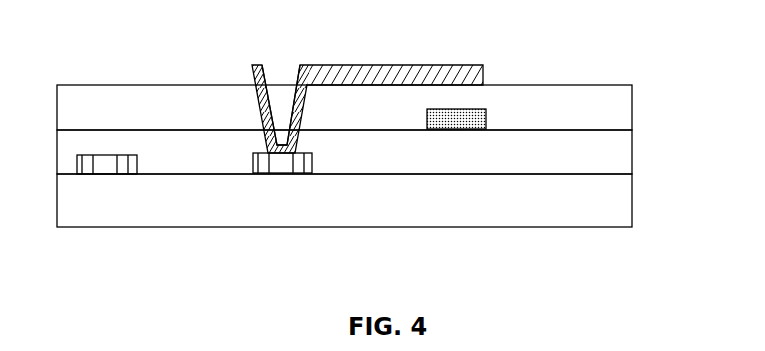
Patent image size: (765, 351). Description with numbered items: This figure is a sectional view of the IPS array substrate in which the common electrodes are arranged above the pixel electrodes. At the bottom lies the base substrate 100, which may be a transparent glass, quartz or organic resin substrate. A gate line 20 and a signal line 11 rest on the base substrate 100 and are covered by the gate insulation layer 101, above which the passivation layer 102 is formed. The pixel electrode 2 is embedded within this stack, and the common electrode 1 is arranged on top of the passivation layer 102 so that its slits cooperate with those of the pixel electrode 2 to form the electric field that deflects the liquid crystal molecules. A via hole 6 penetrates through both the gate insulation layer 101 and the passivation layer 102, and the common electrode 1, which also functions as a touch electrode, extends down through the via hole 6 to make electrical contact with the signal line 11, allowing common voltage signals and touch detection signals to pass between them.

The common electrode 1 is at (468, 73).
The pixel electrode 2 is at (455, 129).
The via hole 6 is at (280, 79).
The signal line 11 is at (282, 158).
The gate line 20 is at (103, 160).
The base substrate 100 is at (600, 202).
The gate insulation layer 101 is at (598, 149).
The passivation layer 102 is at (598, 107).